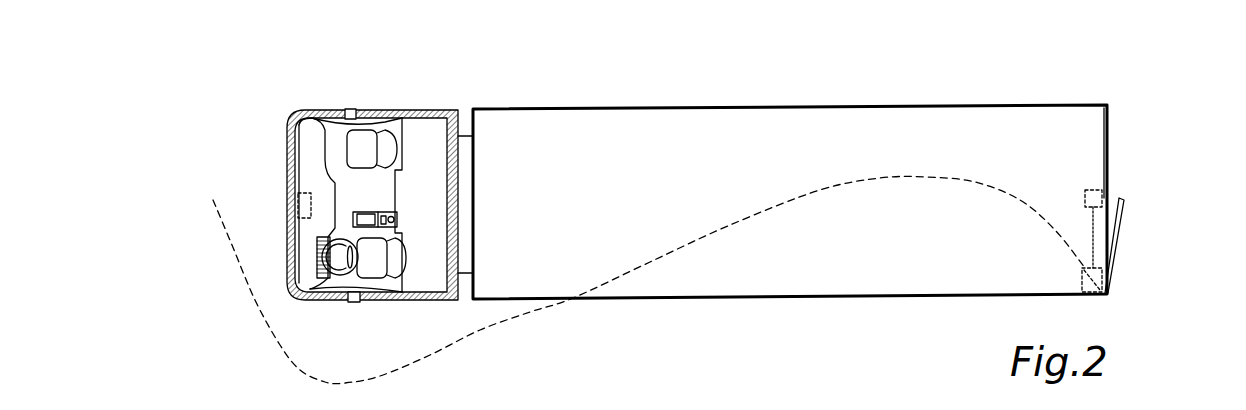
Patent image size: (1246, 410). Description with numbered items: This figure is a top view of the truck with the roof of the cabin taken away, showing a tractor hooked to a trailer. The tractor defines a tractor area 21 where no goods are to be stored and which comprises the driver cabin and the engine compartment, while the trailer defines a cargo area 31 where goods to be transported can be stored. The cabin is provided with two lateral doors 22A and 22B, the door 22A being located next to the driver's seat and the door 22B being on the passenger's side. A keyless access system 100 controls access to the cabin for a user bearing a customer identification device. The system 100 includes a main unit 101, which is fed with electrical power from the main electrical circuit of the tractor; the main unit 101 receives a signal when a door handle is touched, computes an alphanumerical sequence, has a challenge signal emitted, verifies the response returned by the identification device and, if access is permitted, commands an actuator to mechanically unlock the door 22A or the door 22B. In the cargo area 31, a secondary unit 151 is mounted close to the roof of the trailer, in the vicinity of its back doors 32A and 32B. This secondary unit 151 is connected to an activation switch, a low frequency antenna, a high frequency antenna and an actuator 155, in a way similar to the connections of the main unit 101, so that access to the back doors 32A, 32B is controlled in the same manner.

The tractor area 21 is at (468, 34).
The cargo area 31 is at (1108, 30).
The lateral door 22A is at (336, 302).
The lateral door 22B is at (333, 110).
The back door 32A is at (1119, 231).
The back door 32B is at (1108, 143).
The keyless access system 100 is at (176, 153).
The main unit 101 is at (285, 175).
The secondary unit 151 is at (631, 279).
The actuator 155 is at (1085, 196).